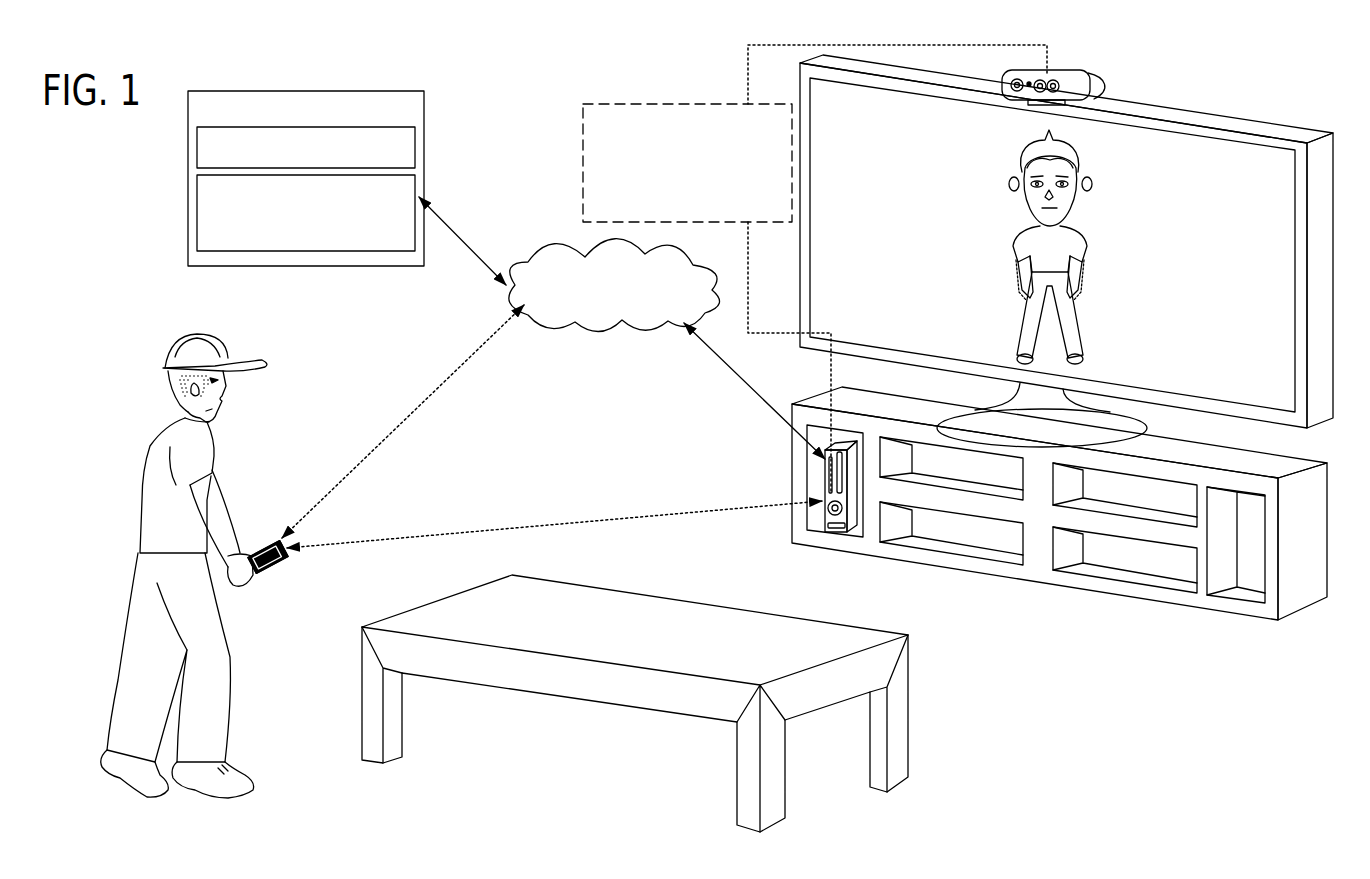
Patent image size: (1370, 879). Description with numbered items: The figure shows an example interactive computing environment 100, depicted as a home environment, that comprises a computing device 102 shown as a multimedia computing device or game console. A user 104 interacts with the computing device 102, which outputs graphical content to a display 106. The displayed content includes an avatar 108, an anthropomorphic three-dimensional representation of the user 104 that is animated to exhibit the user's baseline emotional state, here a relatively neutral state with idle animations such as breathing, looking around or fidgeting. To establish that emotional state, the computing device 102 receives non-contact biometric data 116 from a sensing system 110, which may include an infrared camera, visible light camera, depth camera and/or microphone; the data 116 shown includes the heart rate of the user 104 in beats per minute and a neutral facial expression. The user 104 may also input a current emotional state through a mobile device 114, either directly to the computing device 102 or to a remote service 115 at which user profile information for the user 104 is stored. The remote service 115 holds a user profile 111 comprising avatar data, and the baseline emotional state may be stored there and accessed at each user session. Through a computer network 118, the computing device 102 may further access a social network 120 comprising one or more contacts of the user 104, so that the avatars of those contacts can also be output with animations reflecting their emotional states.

The interactive computing environment 100 is at (525, 86).
The computing device 102 is at (833, 514).
The user 104 is at (193, 332).
The display 106 is at (1247, 118).
The avatar 108 is at (1108, 294).
The sensing system 110 is at (1073, 106).
The user profile 111 is at (365, 157).
The mobile device 114 is at (283, 559).
The remote service 115 is at (254, 178).
The non-contact biometric data 116 is at (674, 135).
The computer network 118 is at (598, 300).
The social network 120 is at (377, 236).